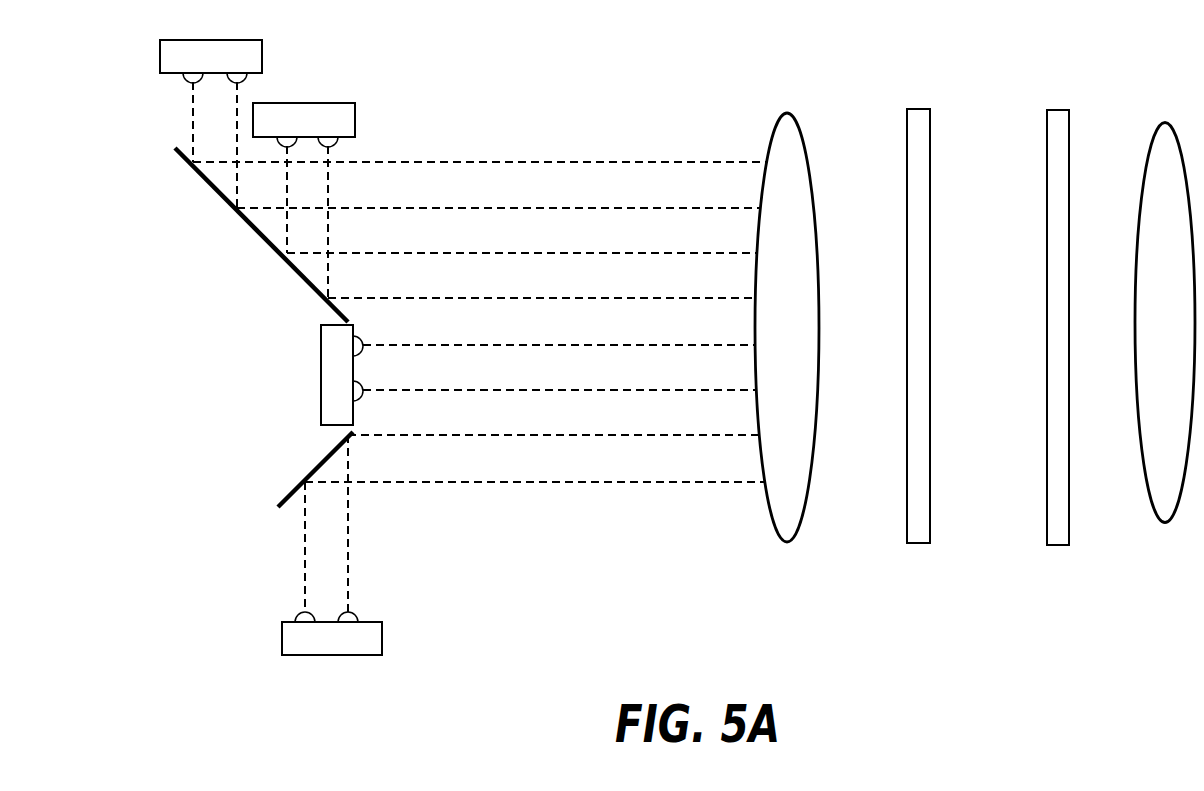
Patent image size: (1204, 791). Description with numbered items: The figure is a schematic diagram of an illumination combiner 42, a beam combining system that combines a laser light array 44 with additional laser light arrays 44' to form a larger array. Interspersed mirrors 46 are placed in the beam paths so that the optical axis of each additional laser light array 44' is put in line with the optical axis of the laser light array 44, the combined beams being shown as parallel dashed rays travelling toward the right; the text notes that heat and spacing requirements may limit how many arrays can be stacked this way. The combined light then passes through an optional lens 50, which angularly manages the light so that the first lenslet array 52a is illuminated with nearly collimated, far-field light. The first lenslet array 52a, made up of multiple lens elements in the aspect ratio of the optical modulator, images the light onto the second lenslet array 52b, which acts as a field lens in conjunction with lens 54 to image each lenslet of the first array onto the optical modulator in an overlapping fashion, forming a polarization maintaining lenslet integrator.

The illumination combiner 42 is at (455, 547).
The laser light array 44 is at (306, 375).
The additional laser light array 44' is at (251, 349).
The interspersed mirror 46 is at (285, 262).
The lens 50 is at (805, 510).
The first lenslet array 52a is at (918, 545).
The second lenslet array 52b is at (1058, 545).
The lens 54 is at (1163, 522).